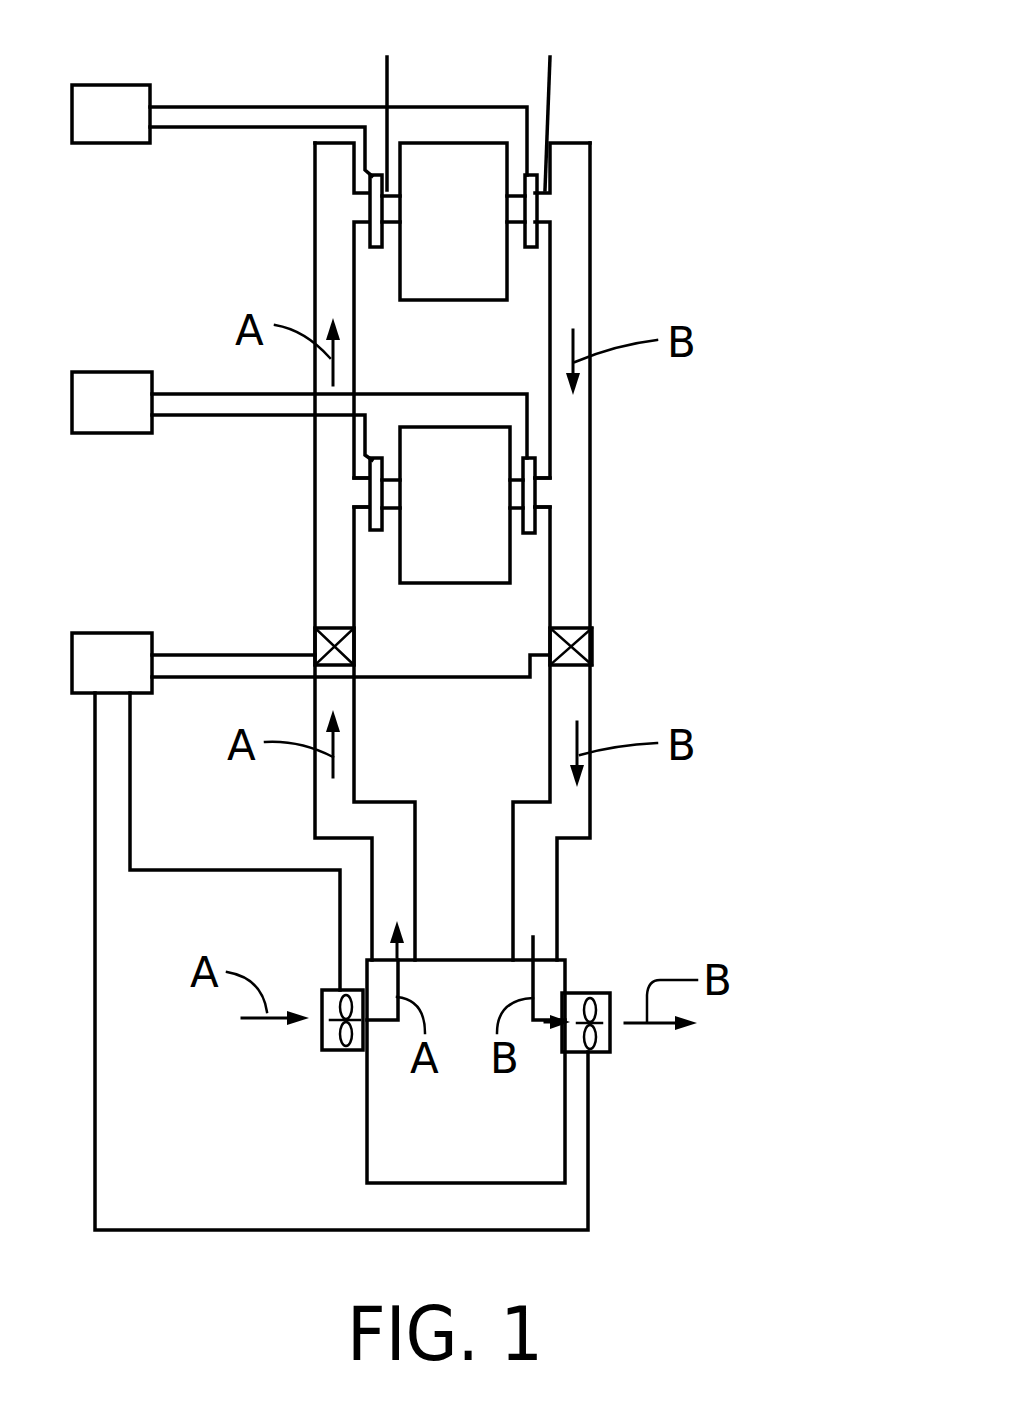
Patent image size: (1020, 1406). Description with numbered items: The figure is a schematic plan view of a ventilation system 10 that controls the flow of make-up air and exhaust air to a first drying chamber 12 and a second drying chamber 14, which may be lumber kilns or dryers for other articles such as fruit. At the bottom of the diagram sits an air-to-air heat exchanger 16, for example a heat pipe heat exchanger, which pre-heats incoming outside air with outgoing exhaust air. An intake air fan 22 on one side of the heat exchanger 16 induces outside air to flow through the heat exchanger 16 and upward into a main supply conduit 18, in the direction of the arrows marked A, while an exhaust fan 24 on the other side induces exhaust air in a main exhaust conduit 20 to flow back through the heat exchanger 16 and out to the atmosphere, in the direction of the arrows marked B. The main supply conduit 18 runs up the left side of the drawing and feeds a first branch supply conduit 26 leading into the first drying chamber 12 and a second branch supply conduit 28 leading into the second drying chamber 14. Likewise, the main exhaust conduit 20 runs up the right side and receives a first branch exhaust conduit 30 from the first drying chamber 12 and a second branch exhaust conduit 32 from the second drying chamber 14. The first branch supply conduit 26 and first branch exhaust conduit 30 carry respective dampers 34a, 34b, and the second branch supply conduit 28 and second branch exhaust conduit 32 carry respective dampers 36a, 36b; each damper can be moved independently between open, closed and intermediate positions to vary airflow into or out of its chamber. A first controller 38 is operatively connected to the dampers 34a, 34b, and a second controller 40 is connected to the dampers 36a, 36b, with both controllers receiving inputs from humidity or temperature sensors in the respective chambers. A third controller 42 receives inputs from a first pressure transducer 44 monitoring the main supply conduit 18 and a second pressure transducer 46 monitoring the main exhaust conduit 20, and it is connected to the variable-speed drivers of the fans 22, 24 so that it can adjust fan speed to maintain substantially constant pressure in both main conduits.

The ventilation system 10 is at (738, 385).
The first drying chamber 12 is at (452, 505).
The second drying chamber 14 is at (453, 221).
The air-to-air heat exchanger 16 is at (367, 1130).
The main supply conduit 18 is at (315, 522).
The main exhaust conduit 20 is at (592, 503).
The intake air fan 22 is at (323, 1030).
The exhaust fan 24 is at (610, 1040).
The first branch supply conduit 26 is at (357, 510).
The second branch supply conduit 28 is at (388, 99).
The first branch exhaust conduit 30 is at (550, 463).
The second branch exhaust conduit 32 is at (551, 99).
The damper 34a is at (370, 462).
The damper 34b is at (537, 530).
The damper 36a is at (371, 177).
The damper 36b is at (538, 243).
The first controller 38 is at (105, 433).
The second controller 40 is at (105, 145).
The third controller 42 is at (110, 633).
The first pressure transducer 44 is at (356, 650).
The second pressure transducer 46 is at (594, 650).